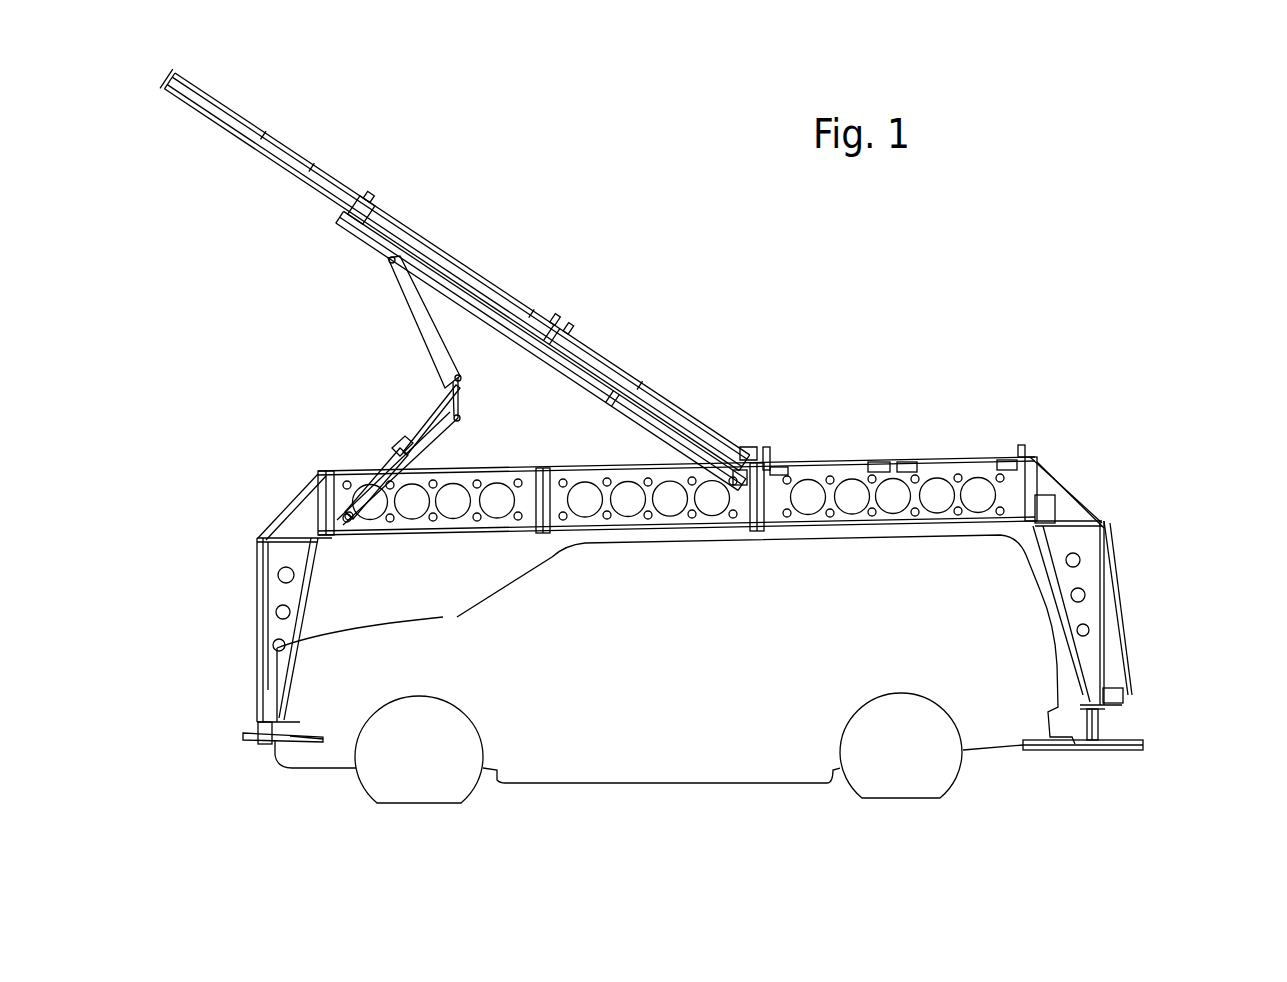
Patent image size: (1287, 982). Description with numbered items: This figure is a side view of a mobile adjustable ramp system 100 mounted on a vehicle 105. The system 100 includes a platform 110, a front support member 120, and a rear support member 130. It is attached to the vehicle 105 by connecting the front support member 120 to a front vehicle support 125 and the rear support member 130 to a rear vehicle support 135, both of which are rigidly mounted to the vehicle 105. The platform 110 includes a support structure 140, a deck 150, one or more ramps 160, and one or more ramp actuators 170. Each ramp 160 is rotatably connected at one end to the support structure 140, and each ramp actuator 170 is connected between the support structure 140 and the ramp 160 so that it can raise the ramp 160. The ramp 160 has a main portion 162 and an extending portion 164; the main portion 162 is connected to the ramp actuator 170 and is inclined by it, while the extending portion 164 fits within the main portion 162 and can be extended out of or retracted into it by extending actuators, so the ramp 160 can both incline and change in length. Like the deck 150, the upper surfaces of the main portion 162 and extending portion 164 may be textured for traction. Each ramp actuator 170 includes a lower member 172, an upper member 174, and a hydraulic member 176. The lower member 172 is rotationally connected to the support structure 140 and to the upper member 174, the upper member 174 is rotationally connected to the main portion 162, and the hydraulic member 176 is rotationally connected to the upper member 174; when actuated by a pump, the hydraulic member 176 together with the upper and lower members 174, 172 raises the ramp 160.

The mobile adjustable ramp system 100 is at (818, 315).
The vehicle 105 is at (672, 775).
The platform 110 is at (1118, 448).
The front support member 120 is at (272, 560).
The front vehicle support 125 is at (247, 736).
The rear support member 130 is at (1092, 541).
The rear vehicle support 135 is at (1078, 746).
The support structure 140 is at (565, 460).
The deck 150 is at (828, 458).
The ramp 160 is at (530, 285).
The main portion 162 is at (477, 272).
The extending portion 164 is at (270, 116).
The ramp actuator 170 is at (376, 366).
The lower member 172 is at (462, 420).
The upper member 174 is at (416, 330).
The hydraulic member 176 is at (388, 455).